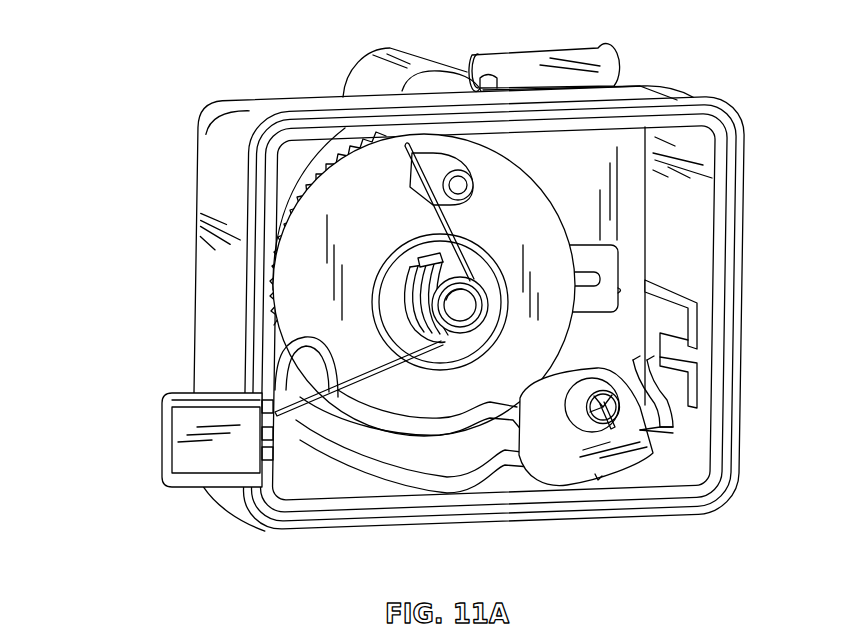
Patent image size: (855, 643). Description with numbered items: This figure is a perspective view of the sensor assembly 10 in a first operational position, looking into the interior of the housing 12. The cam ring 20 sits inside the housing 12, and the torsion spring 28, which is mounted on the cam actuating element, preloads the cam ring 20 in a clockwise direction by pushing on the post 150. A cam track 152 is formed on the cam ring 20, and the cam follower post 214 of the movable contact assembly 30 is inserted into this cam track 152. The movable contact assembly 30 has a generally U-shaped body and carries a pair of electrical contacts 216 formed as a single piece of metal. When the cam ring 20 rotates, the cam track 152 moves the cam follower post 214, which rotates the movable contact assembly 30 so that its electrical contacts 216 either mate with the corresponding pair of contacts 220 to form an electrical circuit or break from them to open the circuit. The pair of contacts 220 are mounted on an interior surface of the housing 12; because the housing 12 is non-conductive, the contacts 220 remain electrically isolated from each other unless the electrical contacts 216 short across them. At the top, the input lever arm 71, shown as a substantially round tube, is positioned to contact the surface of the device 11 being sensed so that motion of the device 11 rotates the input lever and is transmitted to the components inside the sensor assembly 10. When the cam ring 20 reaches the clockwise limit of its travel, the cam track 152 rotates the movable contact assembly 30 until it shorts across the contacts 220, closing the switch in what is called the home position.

The sensor assembly 10 is at (158, 45).
The device 11 is at (622, 80).
The housing 12 is at (737, 318).
The cam ring 20 is at (522, 190).
The torsion spring 28 is at (430, 208).
The movable contact assembly 30 is at (610, 460).
The input lever arm 71 is at (413, 68).
The post 150 is at (413, 125).
The cam track 152 is at (377, 447).
The cam follower post 214 is at (513, 447).
The electrical contacts 216 is at (650, 398).
The pair of contacts 220 is at (673, 323).